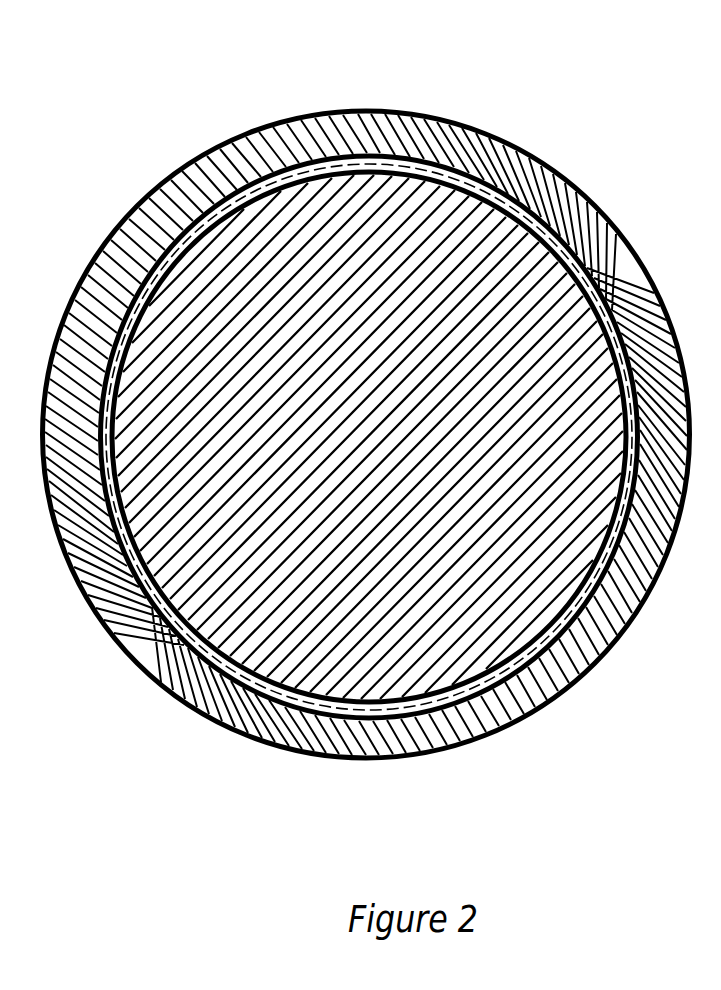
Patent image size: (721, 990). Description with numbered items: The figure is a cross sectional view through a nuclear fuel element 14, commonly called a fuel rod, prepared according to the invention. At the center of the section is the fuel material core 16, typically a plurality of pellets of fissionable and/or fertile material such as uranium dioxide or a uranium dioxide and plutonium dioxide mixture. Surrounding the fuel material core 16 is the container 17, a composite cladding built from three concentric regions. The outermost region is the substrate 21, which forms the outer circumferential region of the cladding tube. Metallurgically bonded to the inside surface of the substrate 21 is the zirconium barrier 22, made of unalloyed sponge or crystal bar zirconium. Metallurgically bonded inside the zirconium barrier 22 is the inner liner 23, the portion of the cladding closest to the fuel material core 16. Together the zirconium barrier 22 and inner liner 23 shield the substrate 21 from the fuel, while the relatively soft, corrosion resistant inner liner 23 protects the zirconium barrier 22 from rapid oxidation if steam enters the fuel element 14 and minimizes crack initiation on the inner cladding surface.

The fuel element 14 is at (413, 97).
The fuel material core 16 is at (580, 262).
The container 17 is at (330, 760).
The substrate 21 is at (500, 146).
The zirconium barrier 22 is at (177, 640).
The inner liner 23 is at (547, 218).